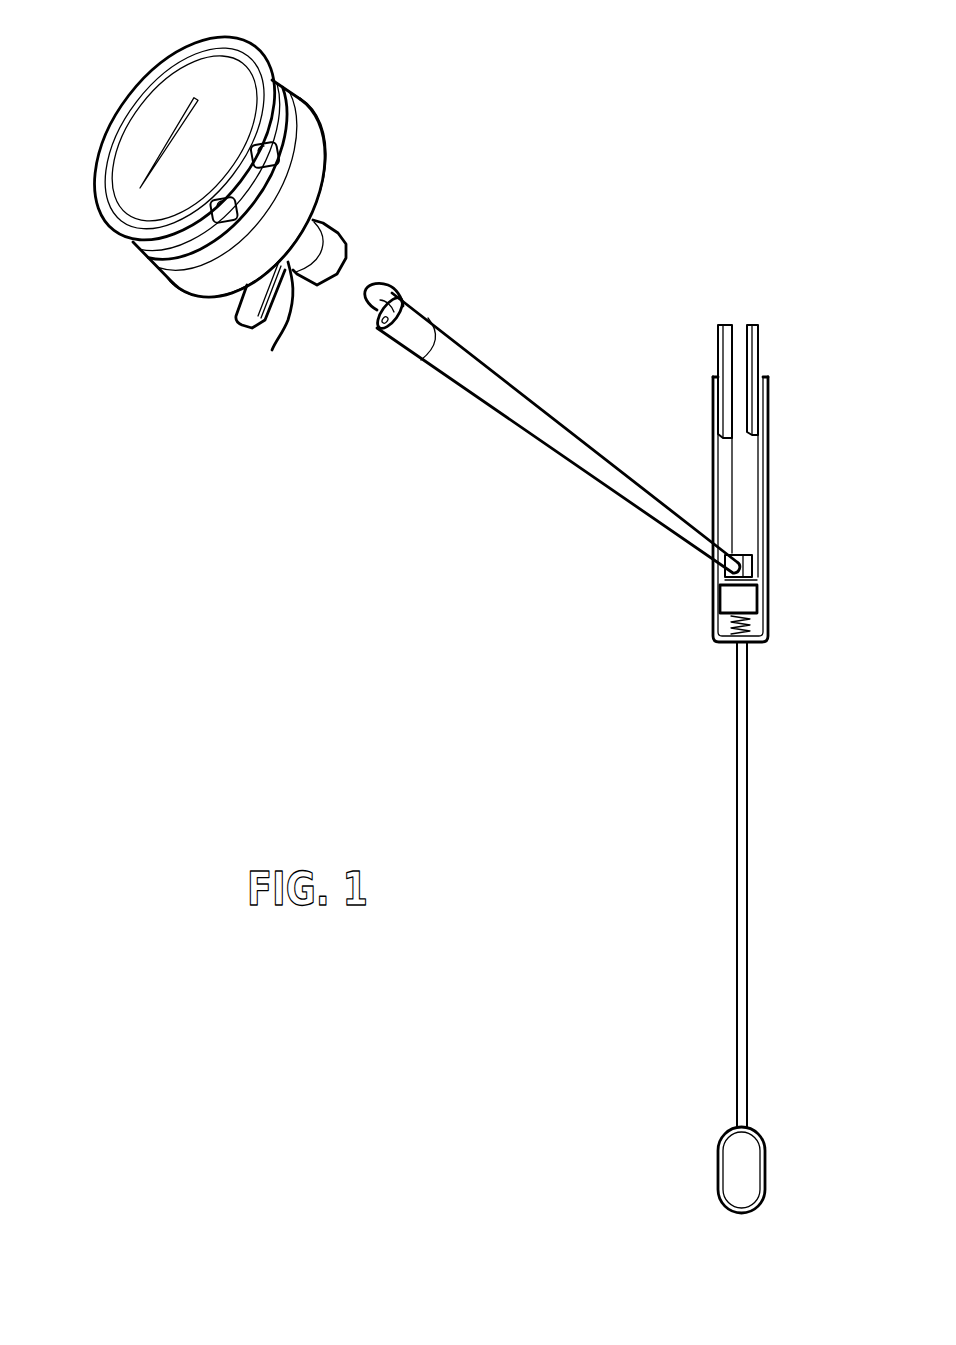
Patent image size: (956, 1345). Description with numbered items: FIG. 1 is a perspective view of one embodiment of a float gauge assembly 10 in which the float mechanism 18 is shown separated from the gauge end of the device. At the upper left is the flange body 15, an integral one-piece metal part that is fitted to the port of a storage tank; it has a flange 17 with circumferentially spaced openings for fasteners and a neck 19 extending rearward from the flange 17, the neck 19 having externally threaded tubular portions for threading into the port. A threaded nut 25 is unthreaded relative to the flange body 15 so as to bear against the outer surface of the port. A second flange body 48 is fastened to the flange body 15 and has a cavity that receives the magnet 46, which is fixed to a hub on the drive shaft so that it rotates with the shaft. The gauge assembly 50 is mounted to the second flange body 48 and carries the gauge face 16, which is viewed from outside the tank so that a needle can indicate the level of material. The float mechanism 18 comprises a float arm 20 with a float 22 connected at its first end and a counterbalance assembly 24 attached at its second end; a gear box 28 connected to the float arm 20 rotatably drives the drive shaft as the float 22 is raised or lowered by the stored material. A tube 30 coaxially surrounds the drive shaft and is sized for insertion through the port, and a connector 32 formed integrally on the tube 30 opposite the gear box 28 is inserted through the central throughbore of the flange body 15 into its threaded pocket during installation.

The float gauge assembly 10 is at (625, 225).
The flange body 15 is at (332, 167).
The gauge face 16 is at (113, 178).
The flange 17 is at (328, 150).
The float mechanism 18 is at (665, 632).
The neck 19 is at (292, 320).
The float arm 20 is at (740, 862).
The float 22 is at (720, 1168).
The counterbalance assembly 24 is at (770, 460).
The threaded nut 25 is at (247, 323).
The gear box 28 is at (750, 597).
The tube 30 is at (520, 413).
The connector 32 is at (425, 315).
The magnet 46 is at (377, 330).
The second flange body 48 is at (303, 101).
The gauge assembly 50 is at (122, 107).